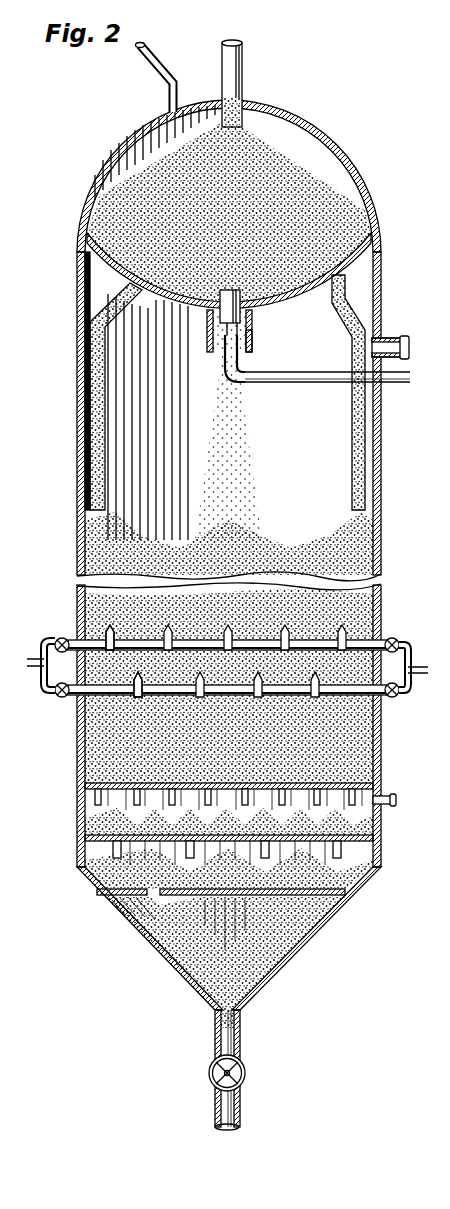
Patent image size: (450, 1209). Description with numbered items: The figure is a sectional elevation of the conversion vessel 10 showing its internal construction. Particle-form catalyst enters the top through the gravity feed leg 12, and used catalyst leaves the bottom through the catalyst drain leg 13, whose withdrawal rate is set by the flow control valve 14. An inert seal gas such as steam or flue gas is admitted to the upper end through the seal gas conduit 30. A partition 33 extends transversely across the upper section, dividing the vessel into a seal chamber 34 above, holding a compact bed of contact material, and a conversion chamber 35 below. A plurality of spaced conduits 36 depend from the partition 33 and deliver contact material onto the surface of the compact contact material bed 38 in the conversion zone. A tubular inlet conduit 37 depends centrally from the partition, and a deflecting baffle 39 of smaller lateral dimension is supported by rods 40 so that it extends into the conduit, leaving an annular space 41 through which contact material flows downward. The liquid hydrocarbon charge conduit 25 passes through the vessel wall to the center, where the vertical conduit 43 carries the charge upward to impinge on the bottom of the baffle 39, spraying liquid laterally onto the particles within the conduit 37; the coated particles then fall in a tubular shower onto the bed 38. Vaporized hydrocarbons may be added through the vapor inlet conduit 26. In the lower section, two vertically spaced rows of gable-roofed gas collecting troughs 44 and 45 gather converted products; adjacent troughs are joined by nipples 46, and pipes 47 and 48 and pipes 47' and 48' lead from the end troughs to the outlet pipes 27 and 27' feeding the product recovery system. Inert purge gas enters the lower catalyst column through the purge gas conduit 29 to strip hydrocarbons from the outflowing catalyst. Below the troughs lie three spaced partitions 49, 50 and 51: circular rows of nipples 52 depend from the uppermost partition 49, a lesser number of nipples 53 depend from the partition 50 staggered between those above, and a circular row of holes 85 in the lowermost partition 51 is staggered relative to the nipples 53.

The conversion vessel 10 is at (78, 493).
The gravity feed leg 12 is at (243, 60).
The catalyst drain leg 13 is at (215, 1037).
The flow control valve 14 is at (209, 1073).
The liquid hydrocarbon charge conduit 25 is at (400, 385).
The vapor inlet conduit 26 is at (400, 340).
The outlet pipe 27 is at (423, 662).
The outlet pipe 27' is at (40, 675).
The purge gas conduit 29 is at (395, 797).
The seal gas conduit 30 is at (151, 70).
The partition 33 is at (311, 300).
The seal chamber 34 is at (306, 133).
The conversion chamber 35 is at (95, 560).
The spaced conduits 36 is at (85, 435).
The tubular inlet conduit 37 is at (207, 355).
The contact material bed 38 is at (115, 517).
The deflecting baffle 39 is at (252, 340).
The rods 40 is at (184, 303).
The annular space 41 is at (245, 322).
The vertical conduit 43 is at (225, 363).
The gas collecting troughs 44 is at (108, 630).
The gas collecting troughs 45 is at (138, 697).
The nipples 46 is at (130, 648).
The pipe 47 is at (409, 633).
The pipe 47' is at (50, 632).
The pipe 48 is at (406, 700).
The pipe 48' is at (58, 703).
The partition 49 is at (85, 785).
The partition 50 is at (85, 838).
The partition 51 is at (117, 894).
The nipples 52 is at (97, 796).
The nipples 53 is at (115, 849).
The holes 85 is at (153, 894).